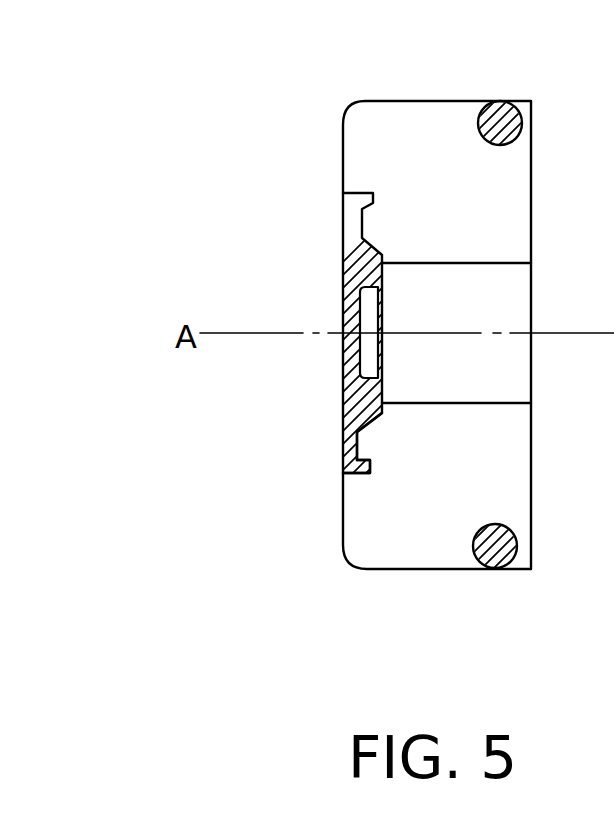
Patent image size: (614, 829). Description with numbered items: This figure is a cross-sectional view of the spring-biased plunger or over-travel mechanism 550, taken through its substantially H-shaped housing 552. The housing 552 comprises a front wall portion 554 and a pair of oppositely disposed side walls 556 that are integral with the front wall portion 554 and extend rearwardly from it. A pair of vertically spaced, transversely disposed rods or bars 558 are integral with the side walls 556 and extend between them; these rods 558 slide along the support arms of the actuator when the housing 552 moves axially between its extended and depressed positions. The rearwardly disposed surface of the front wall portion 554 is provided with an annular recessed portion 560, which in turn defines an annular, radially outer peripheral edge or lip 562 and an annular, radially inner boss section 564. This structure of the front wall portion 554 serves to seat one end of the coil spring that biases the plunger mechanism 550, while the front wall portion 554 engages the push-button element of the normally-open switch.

The plunger mechanism 550 is at (289, 88).
The housing 552 is at (343, 157).
The front wall portion 554 is at (342, 367).
The side walls 556 is at (477, 207).
The rods or bars 558 is at (510, 107).
The annular recessed portion 560 is at (367, 441).
The peripheral edge or lip 562 is at (363, 475).
The boss section 564 is at (368, 397).